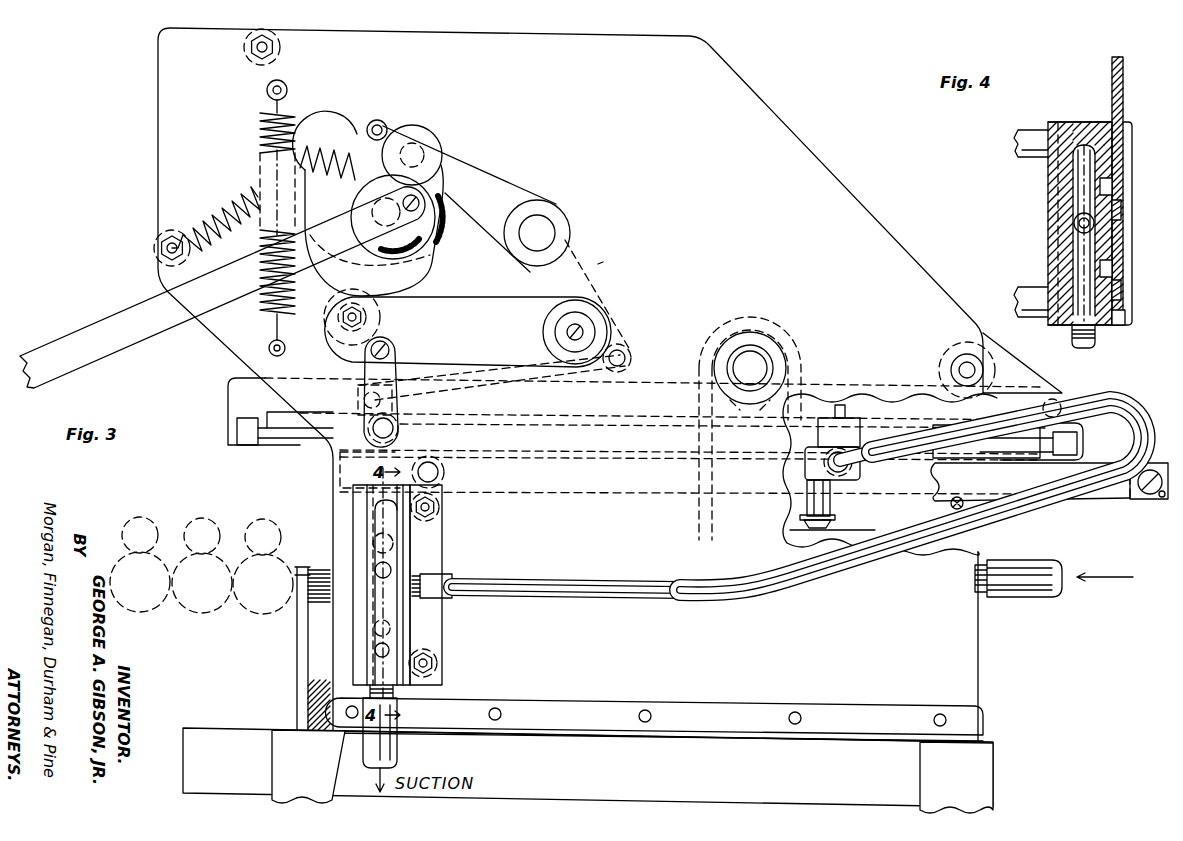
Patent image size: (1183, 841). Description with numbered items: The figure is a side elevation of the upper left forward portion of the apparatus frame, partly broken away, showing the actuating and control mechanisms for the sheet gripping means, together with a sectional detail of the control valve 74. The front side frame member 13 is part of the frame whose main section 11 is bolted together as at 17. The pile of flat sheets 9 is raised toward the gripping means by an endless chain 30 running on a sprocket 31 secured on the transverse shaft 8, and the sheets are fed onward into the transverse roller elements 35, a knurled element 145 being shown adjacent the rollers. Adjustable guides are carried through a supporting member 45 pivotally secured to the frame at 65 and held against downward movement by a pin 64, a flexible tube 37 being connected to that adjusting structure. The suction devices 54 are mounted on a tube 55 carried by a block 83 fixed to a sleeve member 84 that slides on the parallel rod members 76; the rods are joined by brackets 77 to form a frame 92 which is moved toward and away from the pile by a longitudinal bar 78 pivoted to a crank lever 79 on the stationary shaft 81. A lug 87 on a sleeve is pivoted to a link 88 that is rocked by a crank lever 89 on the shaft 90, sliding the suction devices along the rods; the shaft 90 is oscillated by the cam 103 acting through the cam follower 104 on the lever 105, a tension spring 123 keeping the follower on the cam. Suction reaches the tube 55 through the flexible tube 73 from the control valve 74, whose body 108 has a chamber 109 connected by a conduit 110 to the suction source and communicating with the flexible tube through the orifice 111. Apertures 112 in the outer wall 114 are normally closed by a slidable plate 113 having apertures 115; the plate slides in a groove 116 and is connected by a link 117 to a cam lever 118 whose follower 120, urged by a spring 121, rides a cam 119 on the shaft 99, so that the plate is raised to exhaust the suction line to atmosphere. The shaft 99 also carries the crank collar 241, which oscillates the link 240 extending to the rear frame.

In FIG. 3, the transverse shaft 8 is at (757, 365).
In FIG. 3, the pile of flat sheets 9 is at (320, 585).
In FIG. 3, the main frame section 11 is at (667, 780).
In FIG. 3, the front side frame member 13 is at (782, 150).
In FIG. 3, the bolt 17 is at (702, 730).
In FIG. 3, the endless chain 30 is at (698, 528).
In FIG. 3, the sprocket 31 is at (757, 412).
In FIG. 3, the transverse roller elements 35 is at (248, 610).
In FIG. 3, the flexible tube 37 is at (1025, 597).
In FIG. 3, the supporting member 45 is at (565, 493).
In FIG. 3, the suction device 54 is at (799, 505).
In FIG. 3, the tube 55 is at (852, 480).
In FIG. 3, the pin 64 is at (950, 505).
In FIG. 3, the pivot 65 is at (440, 472).
In FIG. 3, the flexible tube 73 is at (905, 445).
In FIG. 3, the control valve 74 is at (445, 535).
In FIG. 4, the control valve 74 is at (1076, 113).
In FIG. 3, the rod members 76 is at (293, 440).
In FIG. 3, the bracket 77 is at (245, 447).
In FIG. 3, the longitudinal bar 78 is at (255, 395).
In FIG. 3, the crank lever 79 is at (1008, 372).
In FIG. 3, the stationary transverse shaft 81 is at (960, 365).
In FIG. 3, the block 83 is at (858, 418).
In FIG. 3, the sleeve member 84 is at (540, 450).
In FIG. 3, the lug 87 is at (362, 401).
In FIG. 3, the link 88 is at (470, 390).
In FIG. 3, the crank lever 89 is at (605, 264).
In FIG. 3, the shaft 90 is at (548, 232).
In FIG. 3, the frame 92 is at (228, 378).
In FIG. 3, the shaft 99 is at (372, 204).
In FIG. 3, the cam 103 is at (324, 112).
In FIG. 3, the cam follower 104 is at (425, 135).
In FIG. 3, the lever 105 is at (478, 172).
In FIG. 3, the valve body 108 is at (443, 622).
In FIG. 4, the valve body 108 is at (1055, 200).
In FIG. 4, the chamber 109 is at (1080, 258).
In FIG. 3, the conduit 110 is at (395, 748).
In FIG. 4, the conduit 110 is at (1086, 344).
In FIG. 3, the orifice 111 is at (415, 565).
In FIG. 4, the orifice 111 is at (1080, 223).
In FIG. 3, the apertures 112 is at (373, 543).
In FIG. 4, the apertures 112 is at (1108, 190).
In FIG. 3, the slidable plate 113 is at (400, 452).
In FIG. 4, the slidable plate 113 is at (1122, 105).
In FIG. 4, the outer wall 114 is at (1105, 238).
In FIG. 3, the apertures 115 is at (378, 575).
In FIG. 4, the apertures 115 is at (1118, 210).
In FIG. 4, the groove 116 is at (1118, 325).
In FIG. 3, the link 117 is at (370, 373).
In FIG. 3, the cam lever 118 is at (471, 302).
In FIG. 3, the cam 119 is at (398, 281).
In FIG. 3, the cam follower 120 is at (380, 316).
In FIG. 3, the spring 121 is at (258, 143).
In FIG. 3, the tension spring 123 is at (218, 208).
In FIG. 3, the knob 145 is at (318, 565).
In FIG. 3, the link 240 is at (73, 338).
In FIG. 3, the crank collar 241 is at (425, 237).